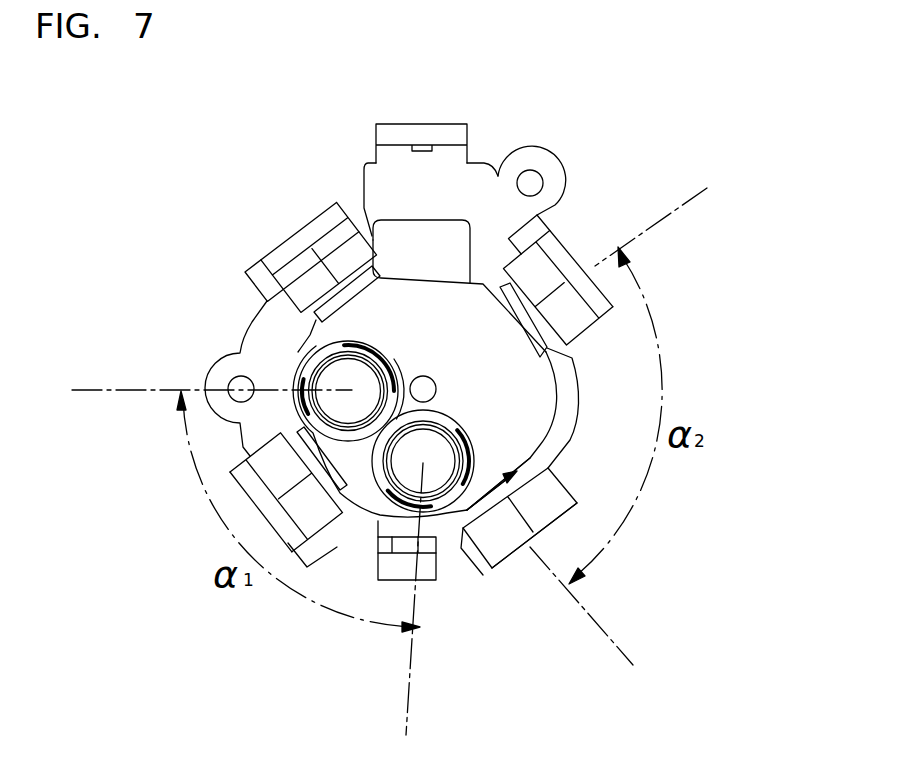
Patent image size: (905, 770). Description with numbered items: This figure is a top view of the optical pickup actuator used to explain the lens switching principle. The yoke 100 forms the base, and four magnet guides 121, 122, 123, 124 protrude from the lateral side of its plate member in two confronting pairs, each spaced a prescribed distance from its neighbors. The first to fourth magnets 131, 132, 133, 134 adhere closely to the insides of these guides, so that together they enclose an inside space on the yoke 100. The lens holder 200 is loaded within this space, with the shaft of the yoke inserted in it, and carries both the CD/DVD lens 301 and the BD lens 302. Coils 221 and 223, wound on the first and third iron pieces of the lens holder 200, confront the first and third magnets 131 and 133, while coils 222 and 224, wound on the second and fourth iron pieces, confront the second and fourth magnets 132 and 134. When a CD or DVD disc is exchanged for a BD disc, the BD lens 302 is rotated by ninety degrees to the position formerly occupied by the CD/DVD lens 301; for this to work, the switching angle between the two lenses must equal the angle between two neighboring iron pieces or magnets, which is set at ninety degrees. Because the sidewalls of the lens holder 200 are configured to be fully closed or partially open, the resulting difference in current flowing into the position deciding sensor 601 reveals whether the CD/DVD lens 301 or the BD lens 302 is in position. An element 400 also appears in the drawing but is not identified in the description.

The yoke 100 is at (592, 183).
The lens holder 200 is at (575, 398).
The magnet guide 121 is at (292, 247).
The magnet guide 122 is at (262, 532).
The magnet guide 123 is at (530, 547).
The magnet guide 124 is at (620, 252).
The first magnet 131 is at (297, 283).
The second magnet 132 is at (287, 525).
The third magnet 133 is at (547, 502).
The fourth magnet 134 is at (585, 293).
The coil 221 is at (333, 300).
The coil 222 is at (345, 495).
The coil 223 is at (555, 468).
The coil 224 is at (555, 351).
The CD/DVD lens 301 is at (433, 461).
The BD lens 302 is at (352, 391).
The terminal bracket 400 is at (420, 585).
The position deciding sensor 601 is at (438, 513).